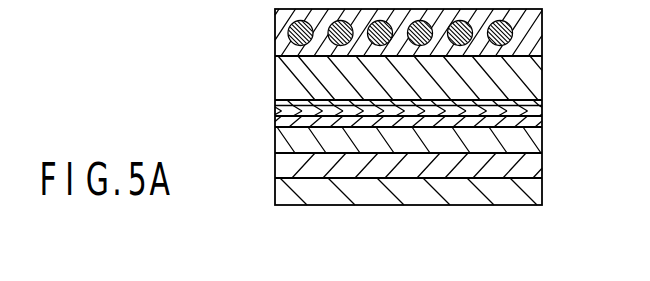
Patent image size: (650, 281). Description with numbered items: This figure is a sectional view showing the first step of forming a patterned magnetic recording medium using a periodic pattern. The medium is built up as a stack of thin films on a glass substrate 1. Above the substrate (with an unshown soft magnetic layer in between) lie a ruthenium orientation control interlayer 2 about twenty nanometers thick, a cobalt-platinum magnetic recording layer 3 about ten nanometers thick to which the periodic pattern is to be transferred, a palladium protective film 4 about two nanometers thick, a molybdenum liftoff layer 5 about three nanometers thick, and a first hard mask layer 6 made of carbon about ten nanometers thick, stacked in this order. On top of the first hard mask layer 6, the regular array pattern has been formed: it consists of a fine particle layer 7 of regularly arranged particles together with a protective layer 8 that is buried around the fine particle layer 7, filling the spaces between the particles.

The glass substrate 1 is at (537, 195).
The Ru orientation control interlayer 2 is at (537, 168).
The magnetic recording layer 3 is at (545, 144).
The Pd protective film 4 is at (540, 115).
The Mo liftoff layer 5 is at (540, 95).
The first hard mask layer 6 is at (540, 67).
The fine particle layer 7 is at (500, 33).
The protective layer 8 is at (540, 20).